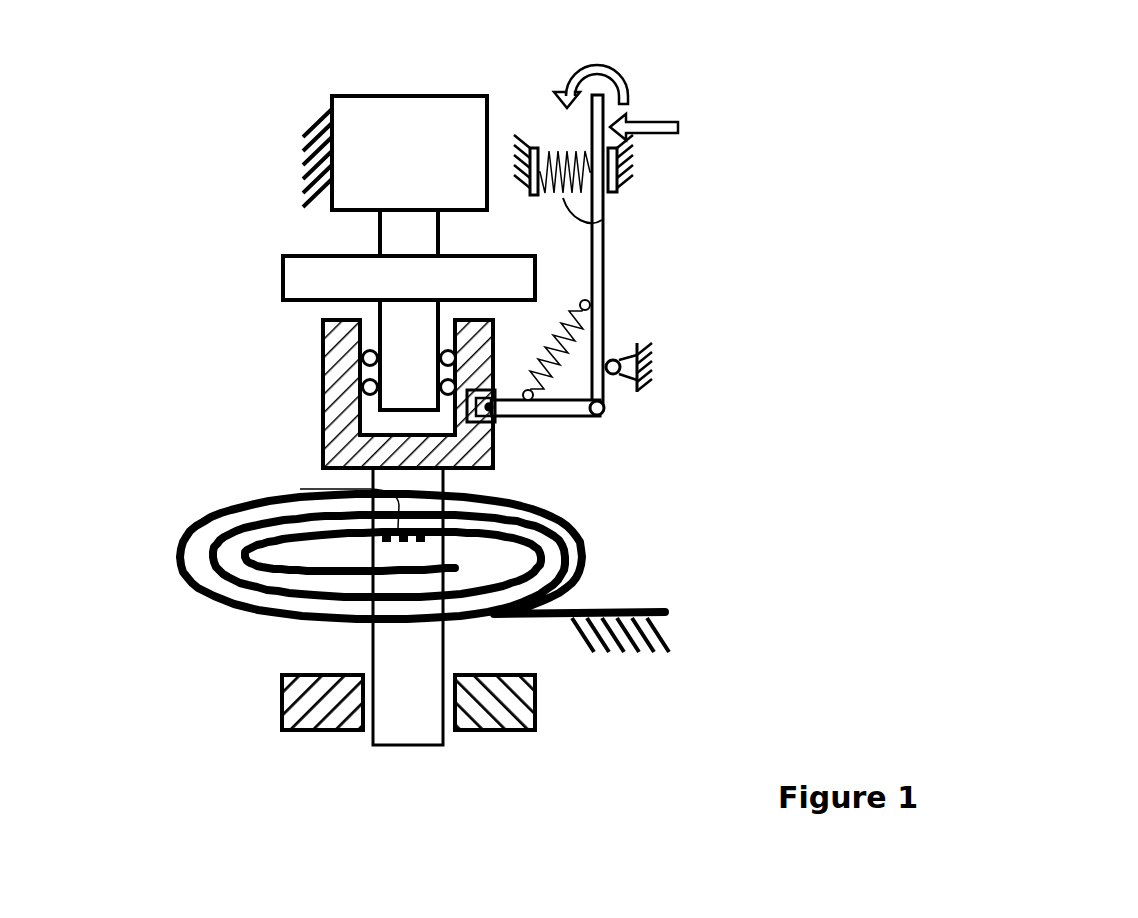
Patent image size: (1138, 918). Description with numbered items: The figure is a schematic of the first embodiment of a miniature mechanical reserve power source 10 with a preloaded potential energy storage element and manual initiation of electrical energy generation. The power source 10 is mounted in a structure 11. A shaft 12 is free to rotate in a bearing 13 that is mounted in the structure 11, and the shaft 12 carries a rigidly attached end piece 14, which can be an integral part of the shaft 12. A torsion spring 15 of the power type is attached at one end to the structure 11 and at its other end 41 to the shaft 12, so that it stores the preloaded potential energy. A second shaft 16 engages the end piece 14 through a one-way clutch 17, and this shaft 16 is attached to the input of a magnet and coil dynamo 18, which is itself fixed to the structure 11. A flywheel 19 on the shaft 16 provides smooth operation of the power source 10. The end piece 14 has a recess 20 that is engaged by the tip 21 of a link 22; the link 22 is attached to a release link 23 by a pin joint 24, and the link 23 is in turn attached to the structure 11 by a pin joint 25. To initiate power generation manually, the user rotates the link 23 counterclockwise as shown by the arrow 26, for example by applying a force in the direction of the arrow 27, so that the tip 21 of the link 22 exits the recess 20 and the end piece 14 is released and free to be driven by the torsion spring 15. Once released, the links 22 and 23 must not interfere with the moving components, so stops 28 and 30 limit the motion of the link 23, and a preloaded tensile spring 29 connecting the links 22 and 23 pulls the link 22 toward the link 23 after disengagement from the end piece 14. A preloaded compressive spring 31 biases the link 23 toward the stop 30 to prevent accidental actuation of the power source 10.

The mechanical reserve power source 10 is at (955, 125).
The structure 11 is at (298, 160).
The shaft 12 is at (408, 690).
The bearing 13 is at (453, 738).
The end piece 14 is at (342, 412).
The torsion spring 15 is at (232, 612).
The shaft 16 is at (405, 338).
The one-way clutch 17 is at (370, 372).
The magnet and coil dynamo 18 is at (367, 125).
The flywheel 19 is at (317, 278).
The recess 20 is at (502, 427).
The tip 21 is at (500, 408).
The link 22 is at (558, 418).
The link 23 is at (607, 292).
The pin joint 24 is at (610, 415).
The pin joint 25 is at (625, 355).
The arrow 26 is at (591, 74).
The arrow 27 is at (650, 112).
The stop 28 is at (540, 146).
The preloaded tensile spring 29 is at (580, 318).
The stop 30 is at (614, 196).
The preloaded compressive spring 31 is at (602, 220).
The other end 41 is at (300, 489).